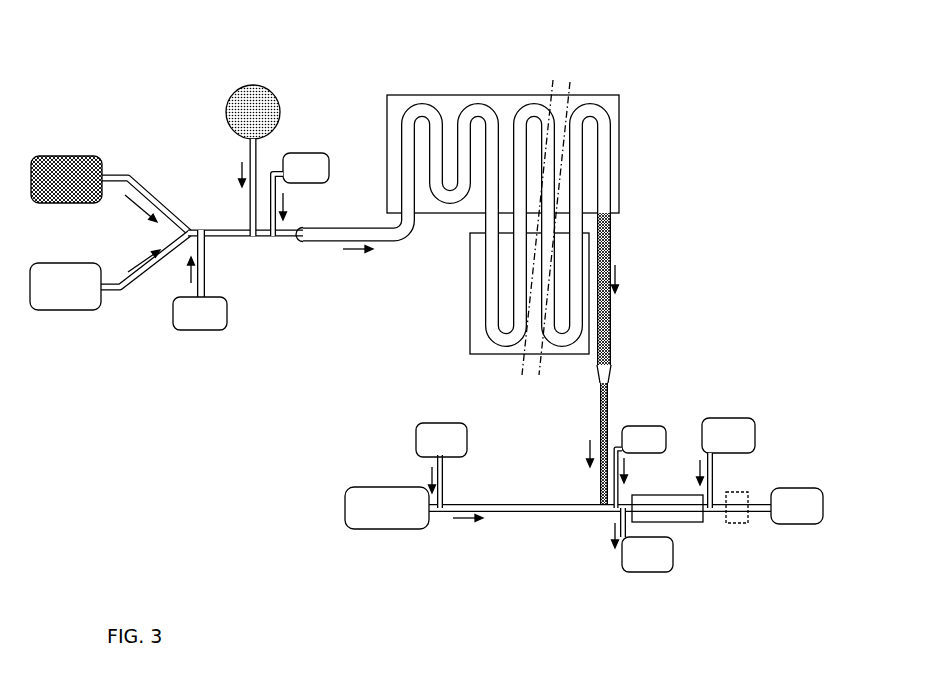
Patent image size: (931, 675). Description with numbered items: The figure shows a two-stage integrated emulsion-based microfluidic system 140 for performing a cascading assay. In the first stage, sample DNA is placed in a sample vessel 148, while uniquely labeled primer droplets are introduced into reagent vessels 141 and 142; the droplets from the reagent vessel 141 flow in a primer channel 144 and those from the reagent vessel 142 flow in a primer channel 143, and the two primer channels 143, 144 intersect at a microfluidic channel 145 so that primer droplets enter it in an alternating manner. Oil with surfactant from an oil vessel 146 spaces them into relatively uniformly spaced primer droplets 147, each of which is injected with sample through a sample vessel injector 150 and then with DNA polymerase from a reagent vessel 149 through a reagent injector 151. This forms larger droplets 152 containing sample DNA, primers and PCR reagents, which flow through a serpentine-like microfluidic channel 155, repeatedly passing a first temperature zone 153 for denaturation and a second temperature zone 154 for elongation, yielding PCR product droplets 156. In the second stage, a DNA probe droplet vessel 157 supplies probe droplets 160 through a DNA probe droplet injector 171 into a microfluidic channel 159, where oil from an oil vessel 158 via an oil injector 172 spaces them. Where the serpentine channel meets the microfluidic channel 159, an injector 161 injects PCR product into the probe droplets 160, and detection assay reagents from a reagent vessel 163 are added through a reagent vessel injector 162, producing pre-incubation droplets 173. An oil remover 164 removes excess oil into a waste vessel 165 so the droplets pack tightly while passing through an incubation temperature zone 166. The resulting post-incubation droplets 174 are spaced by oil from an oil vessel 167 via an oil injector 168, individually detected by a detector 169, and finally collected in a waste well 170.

The two-stage integrated emulsion-based microfluidic system 140 is at (424, 320).
The reagent vessel 141 is at (68, 160).
The reagent vessel 142 is at (72, 298).
The primer channel 143 is at (147, 277).
The primer channel 144 is at (133, 180).
The microfluidic channel 145 is at (192, 230).
The oil vessel 146 is at (215, 328).
The uniformly spaced primer droplets 147 is at (205, 240).
The sample vessel 148 is at (258, 92).
The reagent vessel 149 is at (313, 157).
The sample vessel injector 150 is at (245, 230).
The reagent injector 151 is at (277, 237).
The larger droplets 152 is at (332, 228).
The first temperature zone 153 is at (403, 97).
The second temperature zone 154 is at (470, 328).
The serpentine-like microfluidic channel 155 is at (540, 110).
The PCR product droplets 156 is at (610, 227).
The DNA probe droplet vessel 157 is at (352, 507).
The oil vessel 158 is at (438, 432).
The microfluidic channel 159 is at (500, 504).
The probe droplets 160 is at (509, 512).
The injector 161 is at (598, 503).
The reagent vessel injector 162 is at (618, 506).
The reagent vessel 163 is at (647, 425).
The oil remover 164 is at (630, 502).
The waste vessel 165 is at (623, 558).
The incubation temperature zone 166 is at (675, 517).
The oil vessel 167 is at (728, 432).
The oil injector 168 is at (712, 508).
The detector 169 is at (747, 518).
The waste well 170 is at (800, 495).
The DNA probe droplet injector 171 is at (434, 513).
The oil injector 172 is at (445, 499).
The pre-incubation droplets 173 is at (632, 505).
The post-incubation droplets 174 is at (697, 512).